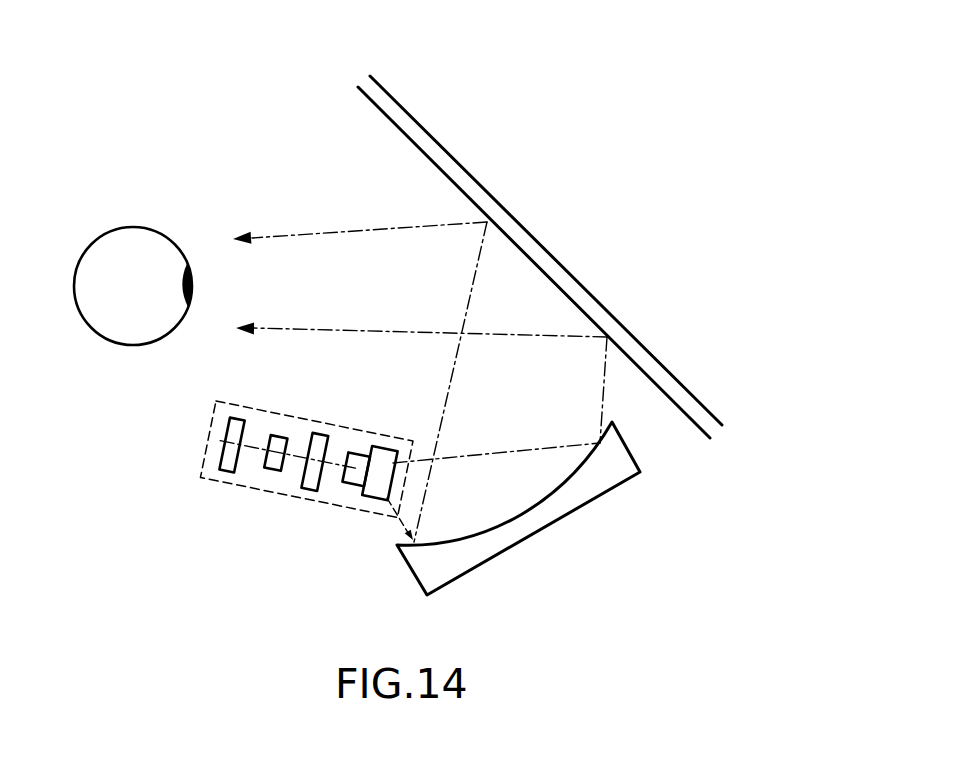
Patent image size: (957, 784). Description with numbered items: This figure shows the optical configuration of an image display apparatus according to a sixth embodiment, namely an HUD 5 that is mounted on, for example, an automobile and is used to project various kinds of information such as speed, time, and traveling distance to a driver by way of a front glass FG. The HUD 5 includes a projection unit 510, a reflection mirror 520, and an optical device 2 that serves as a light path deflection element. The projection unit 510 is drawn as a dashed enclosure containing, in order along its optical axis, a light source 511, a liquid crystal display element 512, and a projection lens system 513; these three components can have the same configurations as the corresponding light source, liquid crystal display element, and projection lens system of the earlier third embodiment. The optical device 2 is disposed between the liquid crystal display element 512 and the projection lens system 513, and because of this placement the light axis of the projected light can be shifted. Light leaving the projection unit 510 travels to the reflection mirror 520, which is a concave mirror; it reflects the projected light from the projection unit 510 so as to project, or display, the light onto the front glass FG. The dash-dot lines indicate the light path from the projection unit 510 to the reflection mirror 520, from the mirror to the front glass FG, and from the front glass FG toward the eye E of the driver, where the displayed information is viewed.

The HUD (image display apparatus) 5 is at (474, 82).
The front glass FG is at (515, 222).
The eye of user E is at (127, 245).
The projection unit 510 is at (210, 430).
The light source 511 is at (223, 471).
The liquid crystal display element 512 is at (268, 471).
The optical device 2 is at (327, 433).
The projection lens system 513 is at (372, 500).
The reflection mirror 520 is at (513, 533).